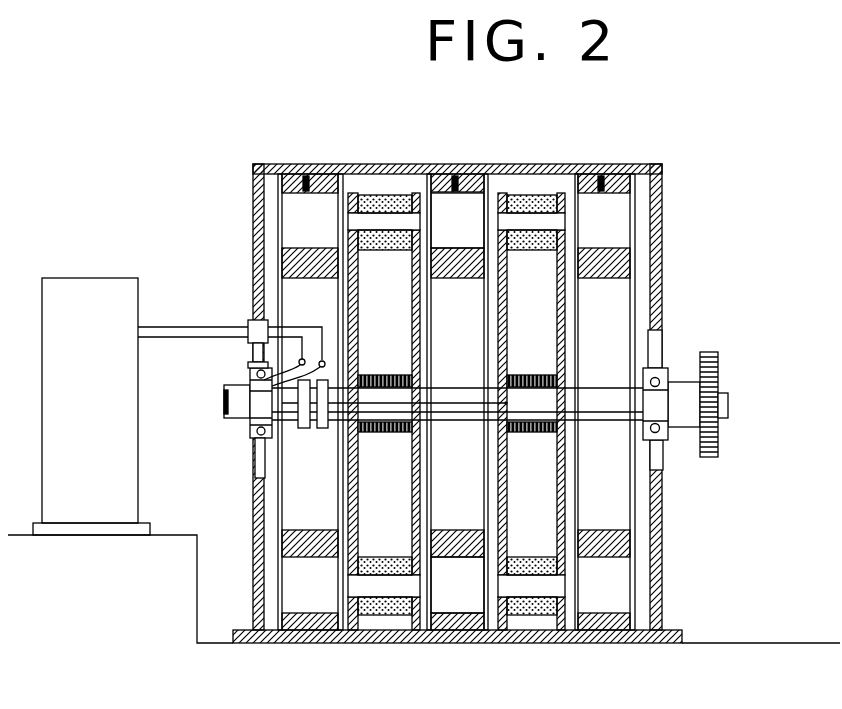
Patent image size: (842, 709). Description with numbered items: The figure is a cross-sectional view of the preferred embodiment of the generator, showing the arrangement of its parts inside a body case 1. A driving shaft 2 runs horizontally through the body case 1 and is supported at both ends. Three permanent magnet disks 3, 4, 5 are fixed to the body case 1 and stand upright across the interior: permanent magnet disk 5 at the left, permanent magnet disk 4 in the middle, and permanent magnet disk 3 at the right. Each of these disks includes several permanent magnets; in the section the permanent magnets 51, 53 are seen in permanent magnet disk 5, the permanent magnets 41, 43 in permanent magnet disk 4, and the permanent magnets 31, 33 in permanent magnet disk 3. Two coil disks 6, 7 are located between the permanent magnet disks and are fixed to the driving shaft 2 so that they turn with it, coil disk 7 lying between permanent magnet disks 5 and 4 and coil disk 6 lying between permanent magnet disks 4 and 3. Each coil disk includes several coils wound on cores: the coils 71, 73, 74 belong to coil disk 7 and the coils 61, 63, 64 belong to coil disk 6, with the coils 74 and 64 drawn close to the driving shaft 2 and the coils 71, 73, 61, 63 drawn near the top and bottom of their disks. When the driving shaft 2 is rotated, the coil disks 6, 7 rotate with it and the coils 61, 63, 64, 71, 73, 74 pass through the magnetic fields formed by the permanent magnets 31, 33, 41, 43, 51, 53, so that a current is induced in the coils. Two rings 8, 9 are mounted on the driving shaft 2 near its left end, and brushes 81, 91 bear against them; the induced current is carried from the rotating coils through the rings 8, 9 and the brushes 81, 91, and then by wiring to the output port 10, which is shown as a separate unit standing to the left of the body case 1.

The body case 1 is at (661, 268).
The driving shaft 2 is at (600, 395).
The permanent magnet disk 3 is at (645, 174).
The permanent magnet disk 4 is at (491, 174).
The permanent magnet disk 5 is at (355, 173).
The coil disk 6 is at (531, 401).
The coil disk 7 is at (384, 402).
The ring 8 is at (297, 431).
The ring 9 is at (320, 433).
The output port 10 is at (100, 278).
The permanent magnet 31 is at (610, 222).
The permanent magnet 33 is at (617, 587).
The permanent magnet 41 is at (434, 200).
The permanent magnet 43 is at (452, 597).
The permanent magnet 51 is at (300, 216).
The permanent magnet 53 is at (308, 588).
The coil 61 is at (527, 251).
The coil 63 is at (540, 614).
The coil 64 is at (527, 433).
The coil 71 is at (382, 251).
The coil 73 is at (378, 614).
The coil 74 is at (382, 433).
The brush 81 is at (248, 338).
The brush 91 is at (252, 362).